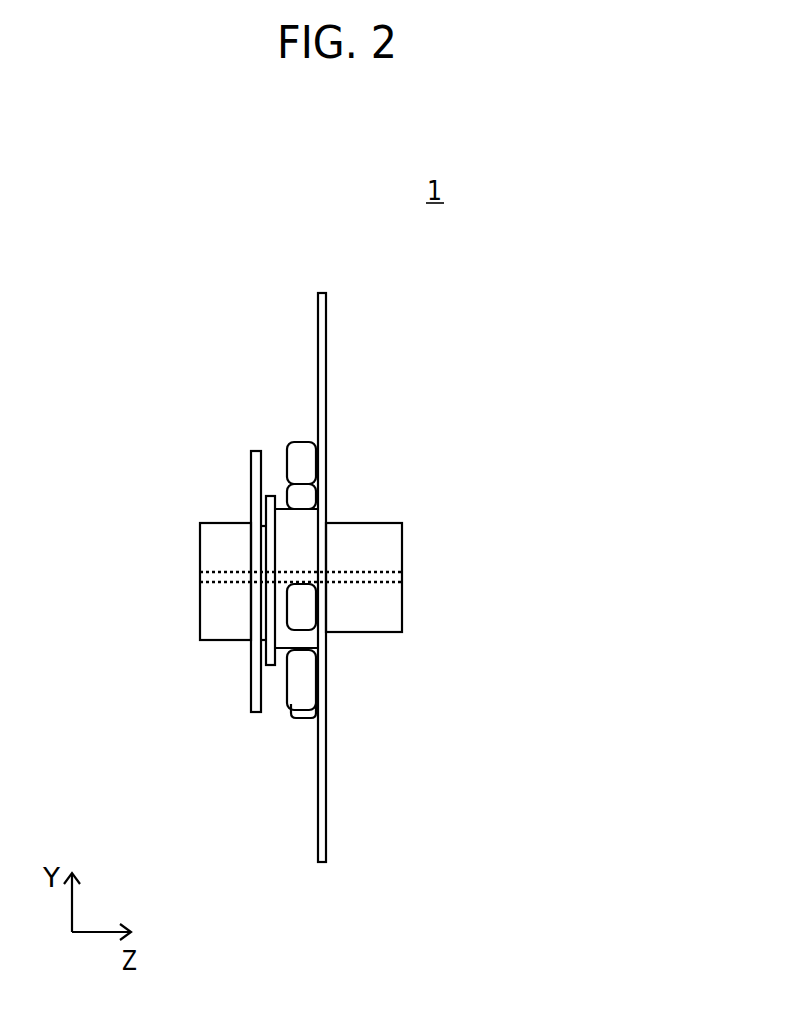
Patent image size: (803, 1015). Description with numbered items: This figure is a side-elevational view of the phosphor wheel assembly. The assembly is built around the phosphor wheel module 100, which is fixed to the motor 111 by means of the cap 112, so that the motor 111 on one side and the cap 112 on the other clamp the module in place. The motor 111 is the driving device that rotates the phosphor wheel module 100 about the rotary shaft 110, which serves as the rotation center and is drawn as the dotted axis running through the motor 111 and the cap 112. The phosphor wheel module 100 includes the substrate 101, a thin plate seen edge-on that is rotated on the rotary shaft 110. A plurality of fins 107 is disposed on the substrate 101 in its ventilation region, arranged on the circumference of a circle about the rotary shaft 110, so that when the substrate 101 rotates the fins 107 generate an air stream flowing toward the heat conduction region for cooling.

The phosphor wheel module 100 is at (348, 354).
The substrate 101 is at (315, 820).
The fins 107 is at (298, 605).
The rotary shaft 110 is at (365, 572).
The motor 111 is at (228, 522).
The cap 112 is at (378, 634).